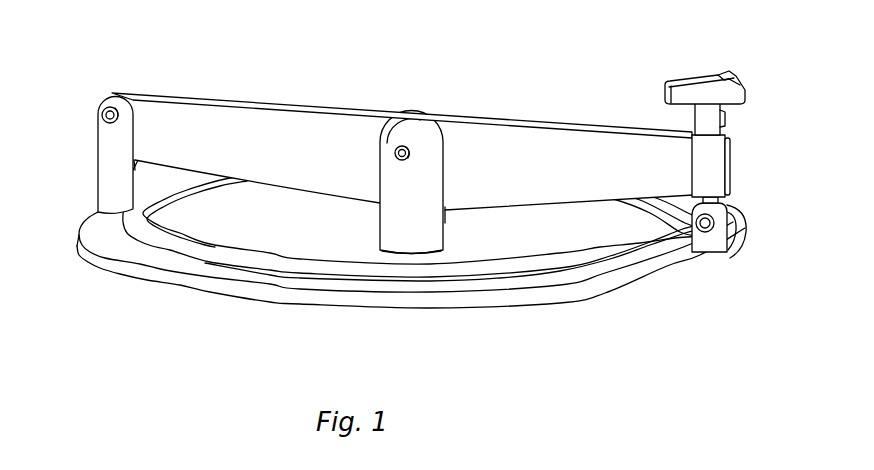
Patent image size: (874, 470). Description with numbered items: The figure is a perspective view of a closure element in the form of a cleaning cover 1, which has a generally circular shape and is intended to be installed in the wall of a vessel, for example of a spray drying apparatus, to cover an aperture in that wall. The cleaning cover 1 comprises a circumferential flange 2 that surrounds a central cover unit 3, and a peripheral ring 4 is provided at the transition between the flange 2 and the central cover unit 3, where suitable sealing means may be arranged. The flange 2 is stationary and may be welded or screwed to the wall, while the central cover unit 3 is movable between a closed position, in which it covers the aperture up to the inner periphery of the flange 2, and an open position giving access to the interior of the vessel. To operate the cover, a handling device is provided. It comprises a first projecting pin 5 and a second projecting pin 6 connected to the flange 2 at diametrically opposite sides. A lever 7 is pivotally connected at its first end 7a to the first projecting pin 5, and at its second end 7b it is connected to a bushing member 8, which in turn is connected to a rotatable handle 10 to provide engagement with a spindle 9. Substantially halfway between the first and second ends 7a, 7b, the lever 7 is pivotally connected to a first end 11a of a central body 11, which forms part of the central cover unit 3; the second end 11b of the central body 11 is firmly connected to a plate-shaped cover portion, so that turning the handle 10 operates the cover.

The cleaning cover 1 is at (89, 44).
The circumferential flange 2 is at (143, 257).
The central cover unit 3 is at (548, 243).
The peripheral ring 4 is at (643, 248).
The first projecting pin 5 is at (112, 175).
The second projecting pin 6 is at (737, 239).
The lever 7 is at (363, 111).
The first end of the lever 7a is at (102, 116).
The second end of the lever 7b is at (712, 163).
The bushing member 8 is at (712, 122).
The spindle 9 is at (722, 200).
The rotatable handle 10 is at (692, 88).
The central body 11 is at (421, 207).
The first end of the central body 11a is at (404, 148).
The second end of the central body 11b is at (428, 253).